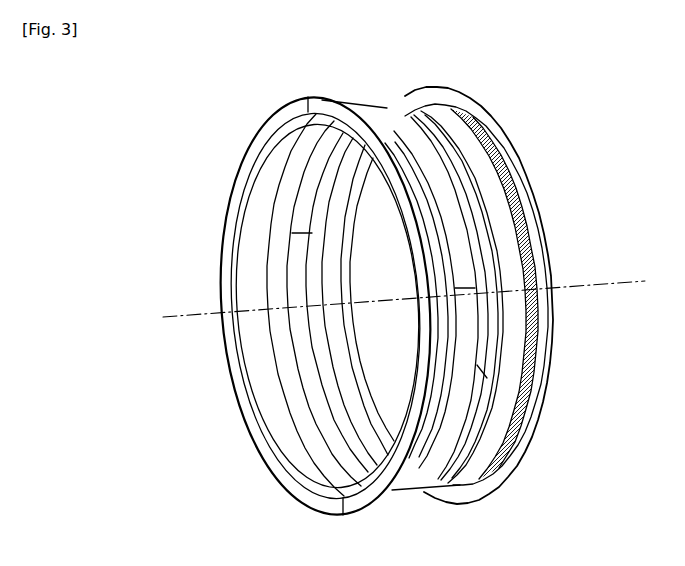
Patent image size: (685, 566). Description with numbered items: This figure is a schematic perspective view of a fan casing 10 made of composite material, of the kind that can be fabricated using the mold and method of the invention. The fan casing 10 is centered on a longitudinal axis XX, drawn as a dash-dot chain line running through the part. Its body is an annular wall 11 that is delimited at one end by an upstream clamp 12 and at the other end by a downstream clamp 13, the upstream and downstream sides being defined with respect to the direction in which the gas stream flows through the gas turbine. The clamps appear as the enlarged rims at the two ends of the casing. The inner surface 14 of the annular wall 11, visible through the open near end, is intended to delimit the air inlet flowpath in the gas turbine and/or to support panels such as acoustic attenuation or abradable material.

The fan casing 10 is at (563, 209).
The annular wall 11 is at (487, 378).
The upstream clamp 12 is at (236, 409).
The downstream clamp 13 is at (503, 131).
The inner surface 14 is at (267, 276).